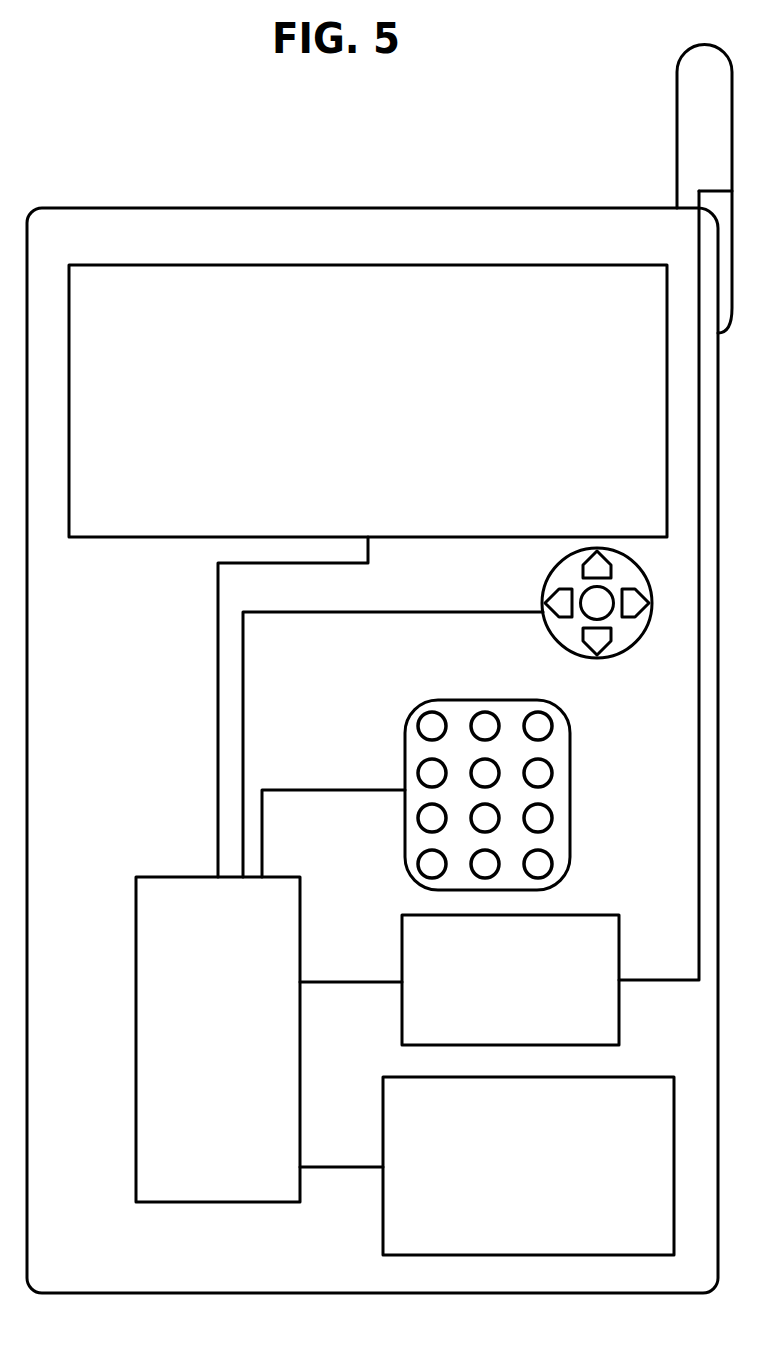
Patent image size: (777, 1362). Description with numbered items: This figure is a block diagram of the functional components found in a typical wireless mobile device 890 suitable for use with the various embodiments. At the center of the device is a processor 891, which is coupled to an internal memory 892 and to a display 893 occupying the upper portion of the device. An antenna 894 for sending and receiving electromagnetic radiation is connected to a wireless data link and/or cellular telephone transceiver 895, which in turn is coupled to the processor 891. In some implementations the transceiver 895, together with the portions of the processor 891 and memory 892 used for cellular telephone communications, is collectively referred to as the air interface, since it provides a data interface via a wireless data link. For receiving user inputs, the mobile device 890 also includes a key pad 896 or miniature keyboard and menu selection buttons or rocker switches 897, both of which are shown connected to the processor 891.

The mobile device 890 is at (322, 210).
The processor 891 is at (247, 1050).
The internal memory 892 is at (547, 1176).
The display 893 is at (370, 402).
The antenna 894 is at (677, 83).
The transceiver 895 is at (530, 991).
The key pad 896 is at (570, 788).
The rocker switches 897 is at (597, 658).